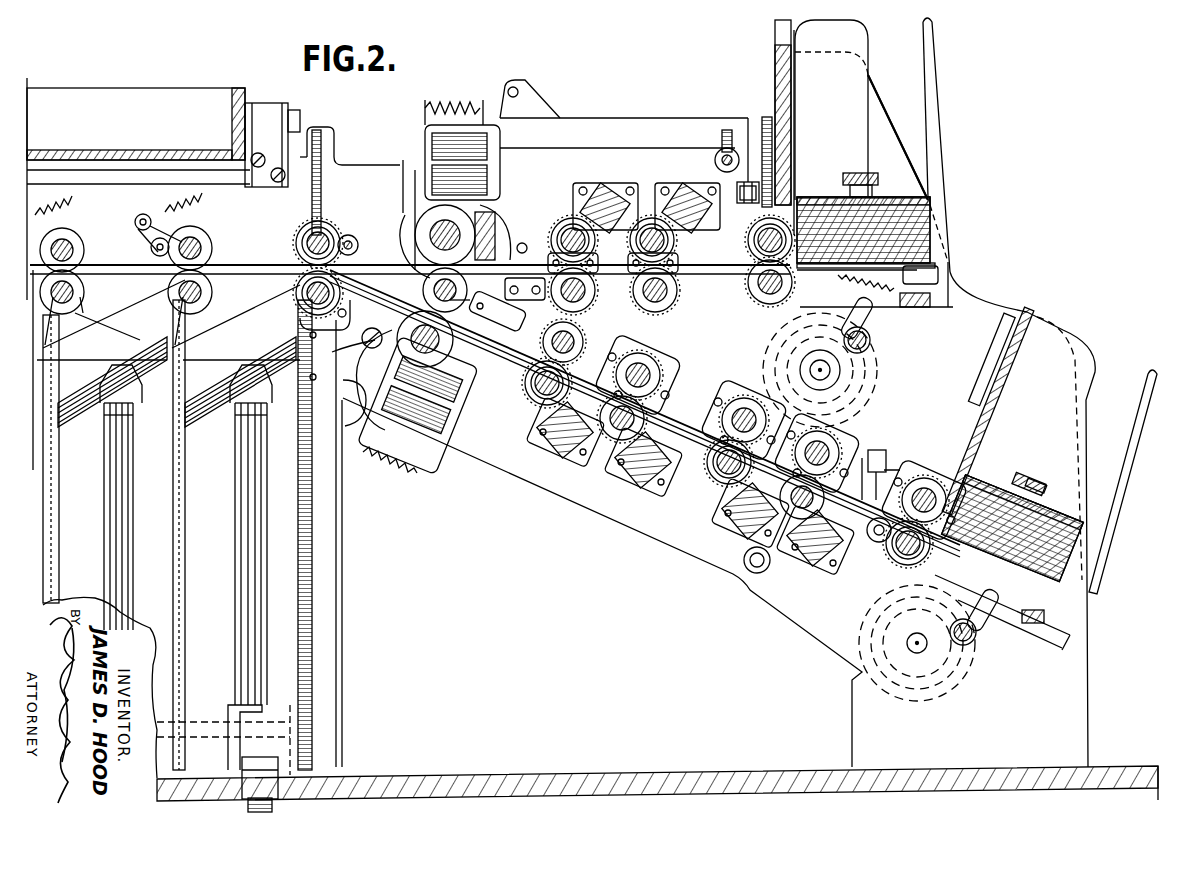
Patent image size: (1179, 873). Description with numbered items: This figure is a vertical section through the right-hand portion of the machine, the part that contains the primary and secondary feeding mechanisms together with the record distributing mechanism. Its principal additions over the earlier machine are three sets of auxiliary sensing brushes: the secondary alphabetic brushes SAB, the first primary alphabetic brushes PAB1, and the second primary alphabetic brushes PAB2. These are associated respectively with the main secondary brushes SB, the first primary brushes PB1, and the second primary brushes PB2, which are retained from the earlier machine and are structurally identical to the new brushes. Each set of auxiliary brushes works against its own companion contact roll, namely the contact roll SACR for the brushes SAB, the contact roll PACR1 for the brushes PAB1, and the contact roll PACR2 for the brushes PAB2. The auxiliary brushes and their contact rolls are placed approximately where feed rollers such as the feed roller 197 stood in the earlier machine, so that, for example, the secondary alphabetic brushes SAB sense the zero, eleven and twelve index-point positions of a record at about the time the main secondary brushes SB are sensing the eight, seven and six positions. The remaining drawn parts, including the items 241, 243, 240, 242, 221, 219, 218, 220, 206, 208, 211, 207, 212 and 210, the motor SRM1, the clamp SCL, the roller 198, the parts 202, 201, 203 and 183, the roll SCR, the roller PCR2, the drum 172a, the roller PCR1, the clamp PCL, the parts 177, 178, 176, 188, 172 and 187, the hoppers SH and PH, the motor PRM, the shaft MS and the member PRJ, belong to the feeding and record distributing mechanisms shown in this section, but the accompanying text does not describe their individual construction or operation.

The feed roller 241 is at (157, 222).
The feed roller 243 is at (180, 245).
The lower feed roller 240 is at (173, 300).
The lower feed roller link 242 is at (145, 335).
The drive gear 221 is at (316, 243).
The roller 219 is at (305, 248).
The lower gear 218 is at (300, 300).
The lower roller 220 is at (300, 325).
The lever arm 206 is at (340, 352).
The large roller 208 is at (440, 236).
The roller bearing block 211 is at (475, 250).
The pressure roller 207 is at (456, 288).
The roller shaft 212 is at (456, 302).
The drive roller 210 is at (427, 338).
The sheet release motor SRM1 is at (450, 137).
The sheet clamp SCL is at (748, 187).
The main secondary brushes SB is at (613, 200).
The secondary alphabetic brushes SAB is at (675, 213).
The roller 198 is at (653, 230).
The feed roller 197 is at (633, 232).
The gear roller 202 is at (570, 232).
The roller 201 is at (563, 254).
The gear 203 is at (543, 388).
The gear 183 is at (545, 345).
The sheet control roller SCR is at (562, 322).
The contact roll SACR is at (668, 303).
The paper control roller 2 PCR2 is at (640, 334).
The drum 172a is at (648, 344).
The contact roll PACR2 is at (650, 367).
The paper control roller 1 PCR1 is at (745, 410).
The contact roll PACR1 is at (840, 445).
The paper clamp PCL is at (886, 458).
The gear 177 is at (790, 215).
The roller 178 is at (790, 207).
The gear 176 is at (770, 305).
The roller 188 is at (895, 545).
The lever 172 is at (798, 290).
The pivot 187 is at (760, 533).
The sheet hopper SH is at (898, 136).
The paper hopper PH is at (1123, 482).
The second primary brushes PB2 is at (548, 443).
The second primary alphabetic brushes PAB2 is at (622, 475).
The first primary brushes PB1 is at (740, 528).
The first primary alphabetic brushes PAB1 is at (885, 563).
The paper release motor PRM is at (403, 430).
The main shaft MS is at (101, 516).
The paper release jack PRJ is at (230, 554).